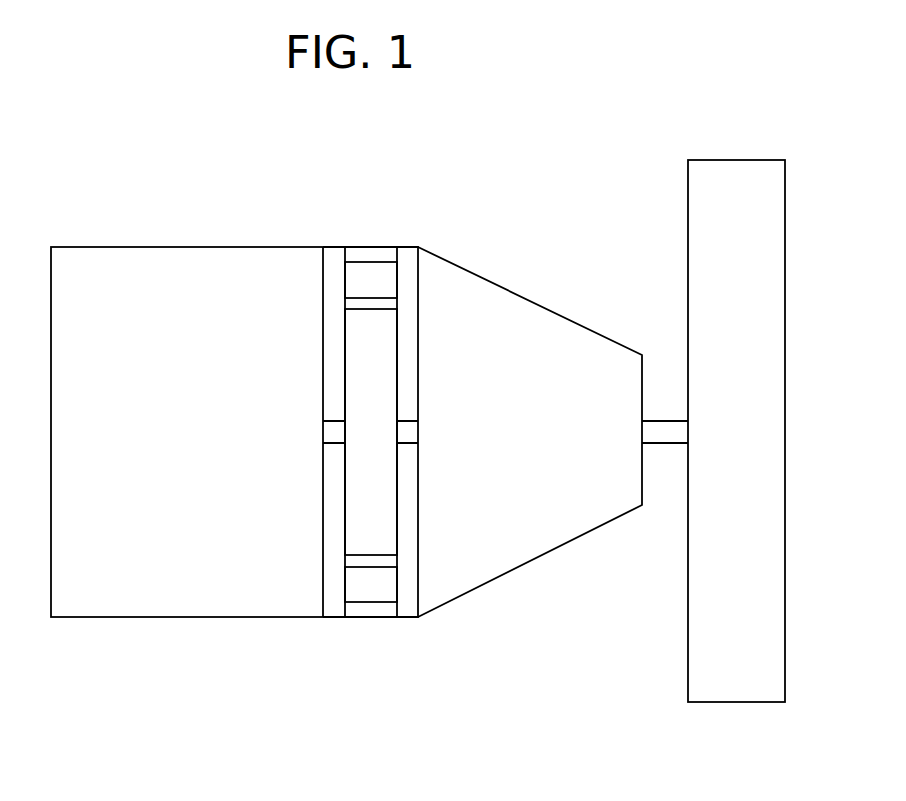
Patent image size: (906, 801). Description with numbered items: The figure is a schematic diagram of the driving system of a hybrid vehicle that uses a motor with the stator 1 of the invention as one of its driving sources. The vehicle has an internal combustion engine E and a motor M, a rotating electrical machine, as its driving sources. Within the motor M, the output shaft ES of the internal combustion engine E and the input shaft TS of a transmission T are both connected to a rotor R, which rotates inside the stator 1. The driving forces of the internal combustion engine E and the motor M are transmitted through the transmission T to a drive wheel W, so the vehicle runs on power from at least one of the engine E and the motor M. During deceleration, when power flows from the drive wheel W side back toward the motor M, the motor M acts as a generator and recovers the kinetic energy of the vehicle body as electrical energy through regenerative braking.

The stator 1 is at (397, 582).
The internal combustion engine E is at (215, 617).
The motor M is at (373, 620).
The rotor R is at (345, 548).
The output shaft ES is at (335, 421).
The input shaft TS is at (405, 421).
The transmission T is at (575, 540).
The drive wheel W is at (730, 702).